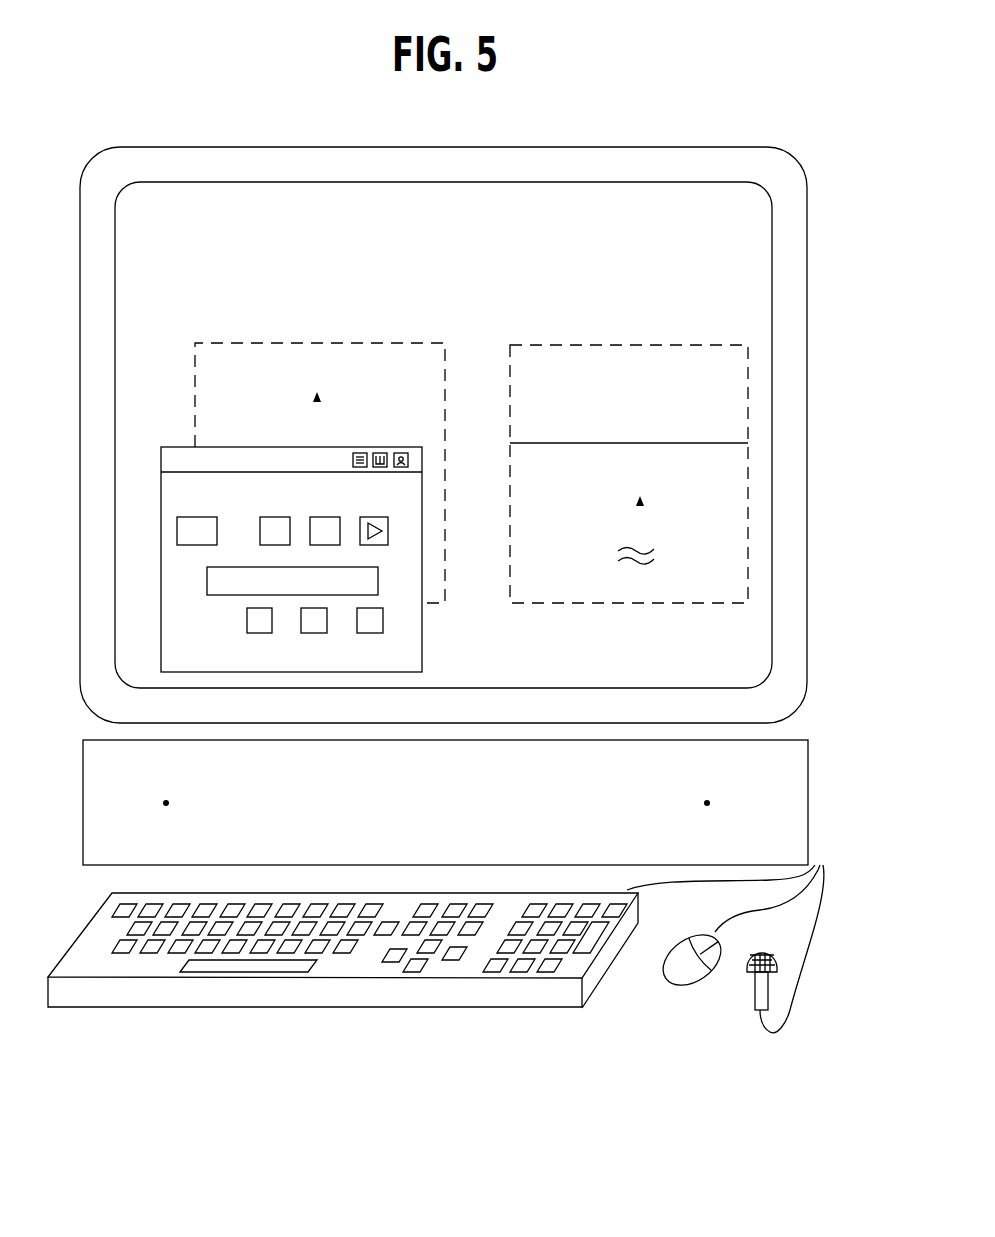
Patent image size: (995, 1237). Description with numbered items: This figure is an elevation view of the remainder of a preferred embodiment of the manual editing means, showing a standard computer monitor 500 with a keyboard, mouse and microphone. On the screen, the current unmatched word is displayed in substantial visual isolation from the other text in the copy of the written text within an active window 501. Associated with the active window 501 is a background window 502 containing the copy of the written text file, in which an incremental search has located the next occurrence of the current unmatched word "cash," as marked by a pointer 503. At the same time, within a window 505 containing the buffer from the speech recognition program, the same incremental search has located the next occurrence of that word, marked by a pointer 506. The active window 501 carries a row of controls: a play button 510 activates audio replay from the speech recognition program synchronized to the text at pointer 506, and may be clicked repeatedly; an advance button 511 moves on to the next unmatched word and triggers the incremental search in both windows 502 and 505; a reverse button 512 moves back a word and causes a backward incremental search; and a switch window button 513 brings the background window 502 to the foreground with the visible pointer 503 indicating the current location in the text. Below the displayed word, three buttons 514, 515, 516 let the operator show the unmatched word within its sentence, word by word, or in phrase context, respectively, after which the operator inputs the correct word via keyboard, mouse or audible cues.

The computer monitor 500 is at (807, 318).
The active window 501 is at (422, 647).
The background window 502 is at (445, 443).
The pointer 503 is at (318, 396).
The window 505 is at (577, 344).
The pointer 506 is at (641, 498).
The play button 510 is at (377, 517).
The advance button 511 is at (325, 517).
The reverse button 512 is at (271, 517).
The switch window button 513 is at (212, 517).
The button 514 is at (255, 633).
The button 515 is at (317, 633).
The button 516 is at (373, 633).